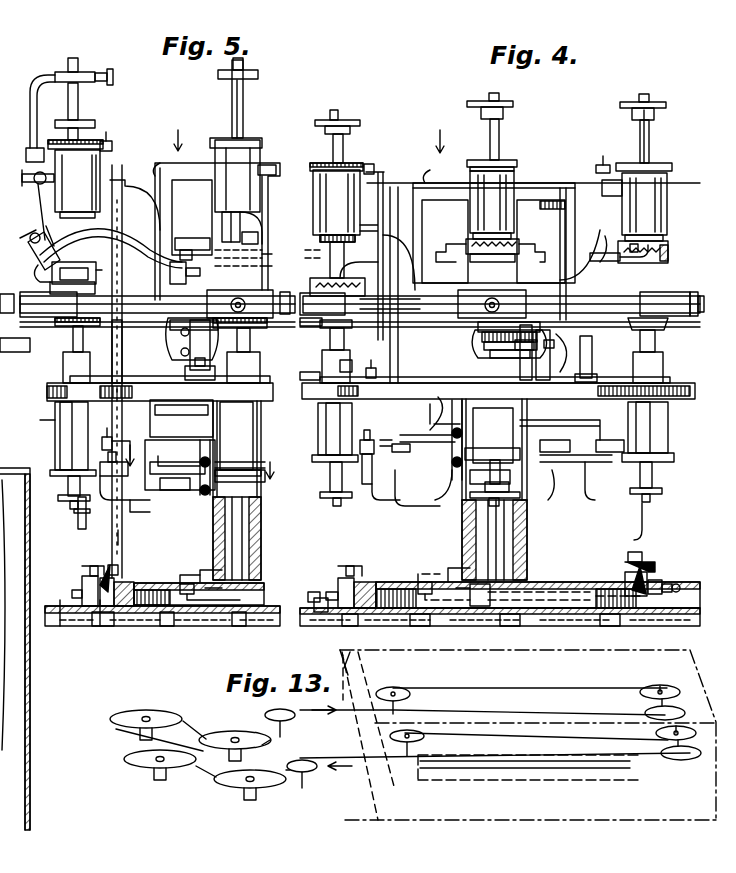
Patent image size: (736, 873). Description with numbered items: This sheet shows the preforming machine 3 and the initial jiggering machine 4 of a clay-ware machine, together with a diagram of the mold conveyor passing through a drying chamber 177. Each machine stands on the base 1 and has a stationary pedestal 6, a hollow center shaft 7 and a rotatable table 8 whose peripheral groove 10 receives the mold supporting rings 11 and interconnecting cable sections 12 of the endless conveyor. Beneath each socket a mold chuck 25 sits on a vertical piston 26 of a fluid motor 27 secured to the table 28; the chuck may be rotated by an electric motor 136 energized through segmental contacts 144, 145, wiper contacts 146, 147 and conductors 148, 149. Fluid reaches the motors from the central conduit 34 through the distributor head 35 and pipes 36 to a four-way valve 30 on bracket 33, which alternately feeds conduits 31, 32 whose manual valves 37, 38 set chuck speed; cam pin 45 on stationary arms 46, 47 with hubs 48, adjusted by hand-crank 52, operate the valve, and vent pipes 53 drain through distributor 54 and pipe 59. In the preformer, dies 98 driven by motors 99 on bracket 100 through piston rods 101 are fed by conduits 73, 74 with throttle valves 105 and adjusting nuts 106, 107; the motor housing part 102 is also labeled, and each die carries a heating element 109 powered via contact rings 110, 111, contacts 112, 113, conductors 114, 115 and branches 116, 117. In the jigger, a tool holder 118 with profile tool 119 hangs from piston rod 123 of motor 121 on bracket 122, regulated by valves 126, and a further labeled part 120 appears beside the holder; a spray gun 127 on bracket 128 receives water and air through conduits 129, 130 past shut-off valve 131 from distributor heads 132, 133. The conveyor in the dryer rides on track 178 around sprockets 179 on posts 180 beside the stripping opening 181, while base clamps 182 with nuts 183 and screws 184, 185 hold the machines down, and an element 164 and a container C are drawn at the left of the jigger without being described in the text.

In FIG. 4, the base 1 is at (308, 612).
In FIG. 4, the preforming machine 3 is at (433, 138).
In FIG. 5, the jiggering machine 4 is at (171, 133).
In FIG. 5, the stationary pedestal 6 is at (213, 560).
In FIG. 4, the stationary pedestal 6 is at (462, 548).
In FIG. 4, the hollow center shaft 7 is at (488, 358).
In FIG. 5, the rotatable table 8 is at (105, 351).
In FIG. 4, the rotatable table 8 is at (401, 326).
In FIG. 5, the peripheral groove 10 is at (211, 450).
In FIG. 5, the mold supporting ring 11 is at (284, 292).
In FIG. 4, the mold supporting ring 11 is at (684, 295).
In FIG. 5, the cable section 12 is at (256, 296).
In FIG. 4, the cable section 12 is at (398, 296).
In FIG. 5, the mold chuck 25 is at (73, 340).
In FIG. 4, the mold chuck 25 is at (330, 342).
In FIG. 5, the vertical piston 26 is at (63, 364).
In FIG. 4, the vertical piston 26 is at (348, 350).
In FIG. 5, the fluid pressure-operated motor 27 is at (55, 440).
In FIG. 4, the fluid pressure-operated motor 27 is at (318, 440).
In FIG. 5, the rotatable table 28 is at (47, 394).
In FIG. 4, the rotatable table 28 is at (684, 396).
In FIG. 5, the four-way control valve 30 is at (132, 516).
In FIG. 4, the four-way control valve 30 is at (394, 498).
In FIG. 5, the conduit 31 is at (100, 470).
In FIG. 4, the conduit 31 is at (360, 448).
In FIG. 5, the conduit 32 is at (180, 445).
In FIG. 4, the conduit 32 is at (490, 420).
In FIG. 4, the bracket 33 is at (637, 521).
In FIG. 5, the central stationary conduit 34 is at (262, 596).
In FIG. 4, the central stationary conduit 34 is at (420, 586).
In FIG. 5, the distributor head 35 is at (248, 453).
In FIG. 4, the distributor head 35 is at (560, 426).
In FIG. 5, the pipe 36 is at (180, 467).
In FIG. 4, the pipe 36 is at (496, 440).
In FIG. 5, the manually operated control valve 37 is at (84, 522).
In FIG. 4, the manually operated control valve 37 is at (366, 480).
In FIG. 5, the manually operated control valve 38 is at (102, 440).
In FIG. 4, the manually operated control valve 38 is at (372, 374).
In FIG. 4, the cam pin 45 is at (340, 366).
In FIG. 5, the stationary cam arm 46 is at (175, 452).
In FIG. 4, the stationary cam arm 46 is at (439, 403).
In FIG. 5, the stationary cam arm 47 is at (155, 504).
In FIG. 4, the stationary cam arm 47 is at (446, 476).
In FIG. 4, the hub 48 is at (470, 440).
In FIG. 5, the hand-crank 52 is at (176, 494).
In FIG. 4, the hand-crank 52 is at (472, 486).
In FIG. 5, the vent pipe 53 is at (104, 547).
In FIG. 4, the vent pipe 53 is at (372, 500).
In FIG. 5, the distributor 54 is at (265, 492).
In FIG. 4, the distributor 54 is at (512, 490).
In FIG. 5, the pipe 59 is at (195, 581).
In FIG. 4, the pipe 59 is at (449, 570).
In FIG. 5, the conduit 73 is at (108, 140).
In FIG. 4, the conduit 73 is at (384, 164).
In FIG. 5, the conduit 74 is at (118, 212).
In FIG. 4, the conduit 74 is at (385, 240).
In FIG. 4, the clay pressing die 98 is at (468, 242).
In FIG. 4, the die motor 99 is at (517, 174).
In FIG. 4, the cylindrical bracket 100 is at (420, 183).
In FIG. 4, the piston rod 101 is at (640, 134).
In FIG. 4, the cylinder body 102 is at (668, 202).
In FIG. 4, the throttle valve 105 is at (371, 164).
In FIG. 4, the nut 106 is at (345, 134).
In FIG. 5, the nut 107 is at (74, 492).
In FIG. 4, the nut 107 is at (345, 496).
In FIG. 4, the electric heating element 109 is at (508, 238).
In FIG. 4, the contact ring 110 is at (476, 334).
In FIG. 4, the contact ring 111 is at (484, 348).
In FIG. 4, the contact 112 is at (520, 380).
In FIG. 4, the contact 113 is at (540, 380).
In FIG. 4, the conductor 114 is at (541, 241).
In FIG. 4, the conductor 115 is at (595, 359).
In FIG. 4, the branch conductor 116 is at (538, 252).
In FIG. 4, the branch conductor 117 is at (445, 241).
In FIG. 5, the tool holder 118 is at (80, 276).
In FIG. 5, the profile tool 119 is at (244, 236).
In FIG. 5, the cylinder 120 is at (42, 284).
In FIG. 5, the profile motor 121 is at (78, 132).
In FIG. 5, the central upright cylindrical bracket 122 is at (162, 152).
In FIG. 5, the piston rod 123 is at (243, 112).
In FIG. 5, the valve 126 is at (90, 150).
In FIG. 5, the spray gun 127 is at (30, 254).
In FIG. 5, the bracket 128 is at (27, 172).
In FIG. 5, the conduit 129 is at (52, 230).
In FIG. 5, the conduit 130 is at (170, 280).
In FIG. 5, the two line shut-off valve 131 is at (192, 220).
In FIG. 5, the water distributor head 132 is at (282, 254).
In FIG. 4, the water distributor head 132 is at (305, 251).
In FIG. 5, the air distributor head 133 is at (282, 268).
In FIG. 4, the air distributor head 133 is at (322, 264).
In FIG. 5, the electric motor 136 is at (29, 420).
In FIG. 5, the arcuate segmental contact 144 is at (260, 324).
In FIG. 4, the arcuate segmental contact 144 is at (305, 322).
In FIG. 5, the arcuate segmental contact 145 is at (252, 342).
In FIG. 5, the wiper contact 146 is at (170, 330).
In FIG. 5, the wiper contact 147 is at (262, 368).
In FIG. 5, the conductor 148 is at (181, 350).
In FIG. 5, the conductor 149 is at (190, 370).
In FIG. 5, the container 164 is at (30, 672).
In FIG. 13, the drying chamber 177 is at (507, 735).
In FIG. 13, the track 178 is at (498, 782).
In FIG. 13, the horizontal sprocket 179 is at (420, 682).
In FIG. 5, the post 180 is at (162, 628).
In FIG. 13, the post 180 is at (390, 690).
In FIG. 5, the stripping opening 181 is at (100, 592).
In FIG. 4, the stripping opening 181 is at (652, 572).
In FIG. 13, the stripping opening 181 is at (556, 784).
In FIG. 5, the base clamp 182 is at (92, 584).
In FIG. 4, the base clamp 182 is at (344, 566).
In FIG. 4, the nut 183 is at (666, 586).
In FIG. 5, the horizontal adjustment screw 184 is at (66, 628).
In FIG. 4, the horizontal adjustment screw 184 is at (318, 600).
In FIG. 5, the vertical hold-down screw 185 is at (124, 586).
In FIG. 4, the vertical hold-down screw 185 is at (372, 582).
In FIG. 5, the container C is at (30, 572).